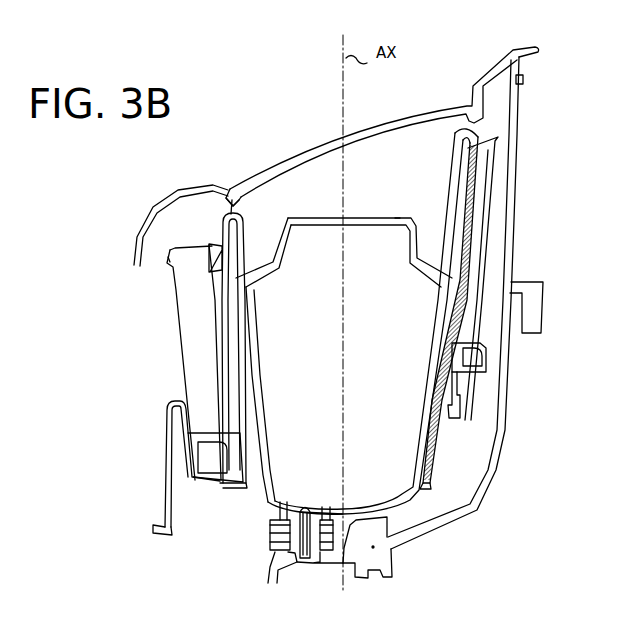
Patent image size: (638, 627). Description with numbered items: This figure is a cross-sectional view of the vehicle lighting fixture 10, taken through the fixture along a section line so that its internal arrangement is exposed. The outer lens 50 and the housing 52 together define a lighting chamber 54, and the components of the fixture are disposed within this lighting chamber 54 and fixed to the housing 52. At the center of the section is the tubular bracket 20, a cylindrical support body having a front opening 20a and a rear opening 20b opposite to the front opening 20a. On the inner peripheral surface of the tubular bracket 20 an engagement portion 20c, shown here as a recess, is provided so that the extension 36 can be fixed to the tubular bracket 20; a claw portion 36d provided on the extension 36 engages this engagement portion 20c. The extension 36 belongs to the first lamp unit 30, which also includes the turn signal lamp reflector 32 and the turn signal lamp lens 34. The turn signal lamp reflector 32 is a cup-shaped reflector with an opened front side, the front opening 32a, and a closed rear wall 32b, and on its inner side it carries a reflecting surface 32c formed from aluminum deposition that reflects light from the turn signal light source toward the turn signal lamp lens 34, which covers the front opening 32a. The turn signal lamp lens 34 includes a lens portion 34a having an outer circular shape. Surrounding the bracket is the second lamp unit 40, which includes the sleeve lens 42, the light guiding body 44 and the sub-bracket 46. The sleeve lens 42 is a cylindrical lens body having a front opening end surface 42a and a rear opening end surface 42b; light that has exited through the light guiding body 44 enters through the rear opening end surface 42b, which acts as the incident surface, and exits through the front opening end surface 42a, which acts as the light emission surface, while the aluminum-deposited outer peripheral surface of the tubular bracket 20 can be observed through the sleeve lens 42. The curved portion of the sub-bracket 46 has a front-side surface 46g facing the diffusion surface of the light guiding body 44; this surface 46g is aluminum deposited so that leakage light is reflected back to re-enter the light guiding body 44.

The vehicle lighting fixture 10 is at (440, 65).
The tubular bracket 20 is at (227, 362).
The front opening 20a is at (222, 262).
The rear opening 20b is at (248, 485).
The engagement portion 20c is at (235, 233).
The first lamp unit 30 is at (313, 205).
The turn signal lamp reflector 32 is at (263, 367).
The front opening 32a is at (253, 283).
The rear wall 32b is at (330, 503).
The reflecting surface 32c is at (260, 394).
The turn signal lamp lens 34 is at (353, 220).
The lens portion 34a is at (370, 252).
The extension 36 is at (230, 202).
The claw portion 36d is at (223, 277).
The second lamp unit 40 is at (158, 323).
The sleeve lens 42 is at (483, 230).
The front opening end surface 42a is at (181, 243).
The rear opening end surface 42b is at (226, 447).
The light guiding body 44 is at (477, 352).
The sub-bracket 46 is at (205, 483).
The front-side surface 46g is at (222, 483).
The outer lens 50 is at (370, 130).
The housing 52 is at (517, 193).
The lighting chamber 54 is at (420, 166).